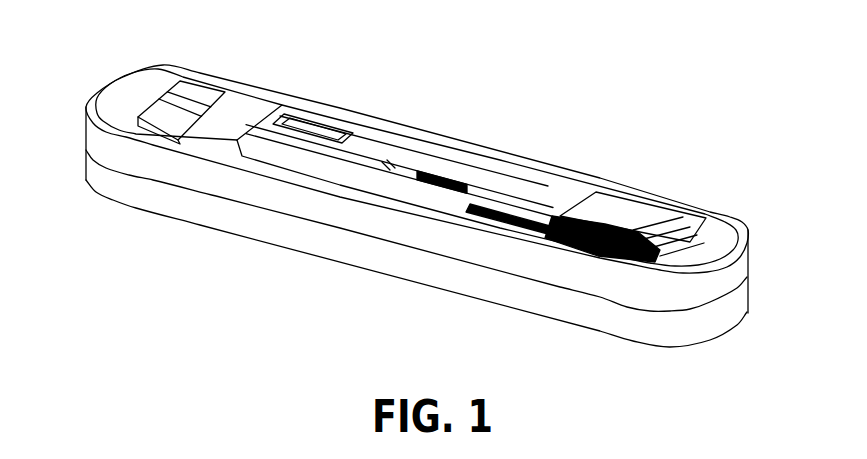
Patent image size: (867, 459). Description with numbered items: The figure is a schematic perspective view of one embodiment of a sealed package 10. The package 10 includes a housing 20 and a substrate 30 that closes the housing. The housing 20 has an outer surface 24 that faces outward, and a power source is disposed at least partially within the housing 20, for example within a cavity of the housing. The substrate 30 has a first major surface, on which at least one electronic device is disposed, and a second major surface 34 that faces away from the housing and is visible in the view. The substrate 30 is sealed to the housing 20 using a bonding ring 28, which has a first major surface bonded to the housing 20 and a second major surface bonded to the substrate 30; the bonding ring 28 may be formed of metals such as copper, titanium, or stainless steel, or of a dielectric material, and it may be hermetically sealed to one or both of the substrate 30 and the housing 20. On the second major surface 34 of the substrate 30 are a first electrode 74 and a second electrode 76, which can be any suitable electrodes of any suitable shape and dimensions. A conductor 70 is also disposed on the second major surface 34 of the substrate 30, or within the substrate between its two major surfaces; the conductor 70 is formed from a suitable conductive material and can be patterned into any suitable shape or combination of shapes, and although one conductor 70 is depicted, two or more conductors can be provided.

The sealed package 10 is at (427, 187).
The housing 20 is at (417, 263).
The outer surface 24 is at (221, 213).
The bonding ring 28 is at (97, 146).
The substrate 30 is at (427, 190).
The second major surface 34 is at (590, 252).
The conductor 70 is at (448, 236).
The first electrode 74 is at (132, 98).
The second electrode 76 is at (721, 237).